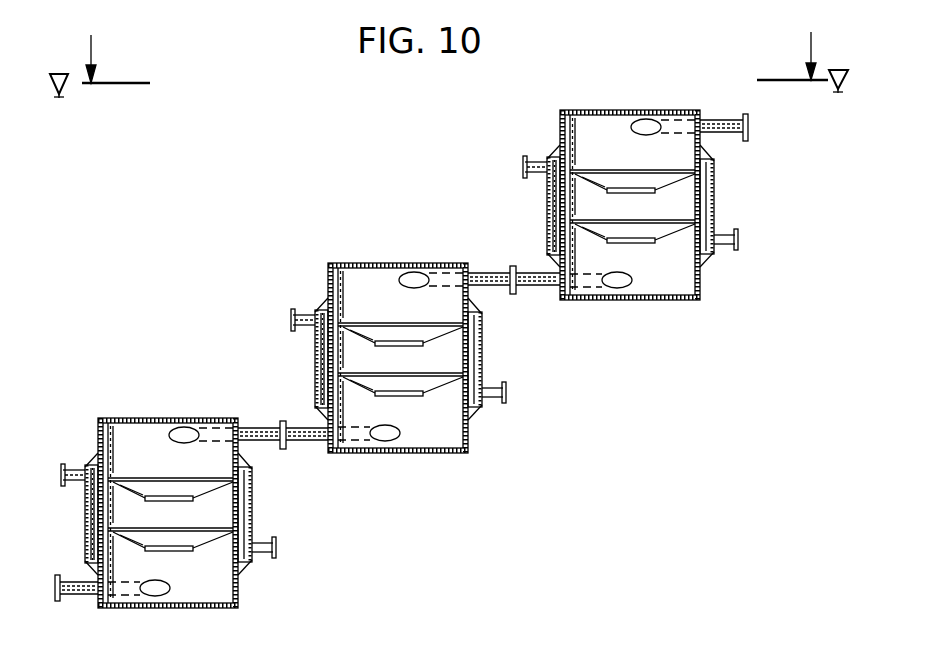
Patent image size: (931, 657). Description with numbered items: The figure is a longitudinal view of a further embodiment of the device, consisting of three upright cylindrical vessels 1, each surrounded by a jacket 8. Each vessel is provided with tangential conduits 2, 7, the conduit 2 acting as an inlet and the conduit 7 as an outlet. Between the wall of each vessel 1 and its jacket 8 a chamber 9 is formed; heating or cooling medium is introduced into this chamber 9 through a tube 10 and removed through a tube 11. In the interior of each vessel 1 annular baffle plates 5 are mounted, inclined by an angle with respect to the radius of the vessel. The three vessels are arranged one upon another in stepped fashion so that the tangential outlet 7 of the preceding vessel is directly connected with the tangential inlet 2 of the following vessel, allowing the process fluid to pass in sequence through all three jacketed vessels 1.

The upright cylindrical vessel 1 is at (103, 418).
The tangential inlet conduit 2 is at (80, 597).
The annular baffle plate 5 is at (252, 520).
The tangential outlet conduit 7 is at (255, 428).
The jacket 8 is at (86, 521).
The chamber 9 is at (88, 553).
The medium supply tube 10 is at (62, 468).
The medium removal tube 11 is at (278, 555).